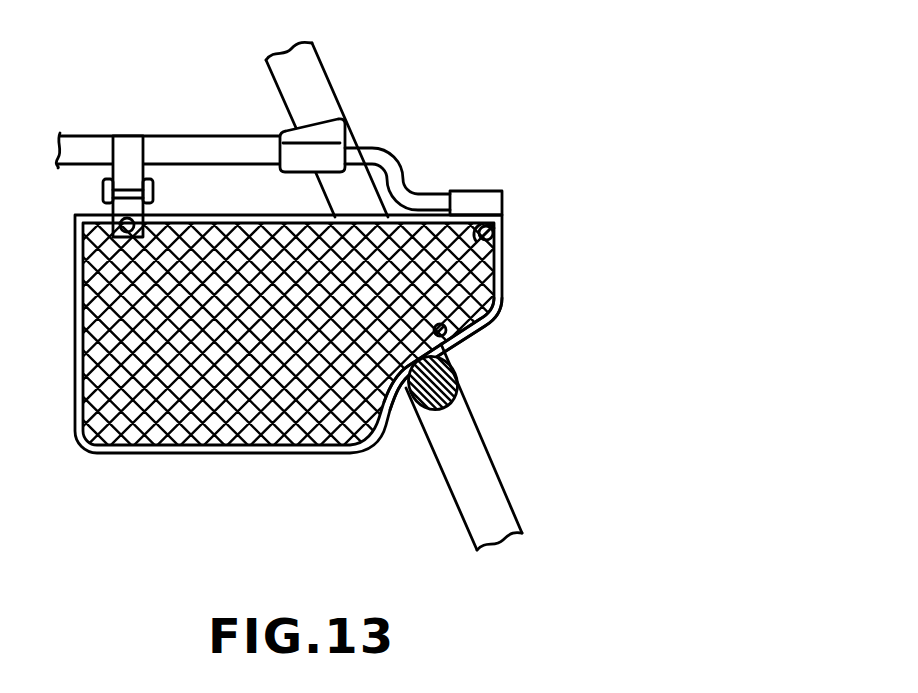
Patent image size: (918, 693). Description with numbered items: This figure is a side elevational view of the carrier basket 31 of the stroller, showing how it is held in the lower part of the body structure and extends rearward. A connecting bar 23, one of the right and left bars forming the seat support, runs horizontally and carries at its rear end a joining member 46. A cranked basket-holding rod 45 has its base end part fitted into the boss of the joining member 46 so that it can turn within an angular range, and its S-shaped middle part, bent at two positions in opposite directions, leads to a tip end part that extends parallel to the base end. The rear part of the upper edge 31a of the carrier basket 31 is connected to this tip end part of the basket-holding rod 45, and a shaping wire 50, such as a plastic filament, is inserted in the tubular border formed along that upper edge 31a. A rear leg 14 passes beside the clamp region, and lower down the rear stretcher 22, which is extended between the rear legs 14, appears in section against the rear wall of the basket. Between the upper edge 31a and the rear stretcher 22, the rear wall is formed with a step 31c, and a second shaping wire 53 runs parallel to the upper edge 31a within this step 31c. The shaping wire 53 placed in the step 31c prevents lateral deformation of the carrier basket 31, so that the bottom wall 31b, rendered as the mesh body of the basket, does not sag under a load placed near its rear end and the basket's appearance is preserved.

The rear leg 14 is at (317, 72).
The rear stretcher 22 is at (435, 384).
The connecting bar 23 is at (183, 147).
The carrier basket 31 is at (214, 452).
The upper edge 31a is at (502, 212).
The bottom wall 31b is at (240, 446).
The step 31c is at (466, 337).
The basket-holding rod 45 is at (421, 194).
The joining member 46 is at (333, 132).
The shaping wire 50 is at (498, 235).
The shaping wire 53 is at (478, 328).